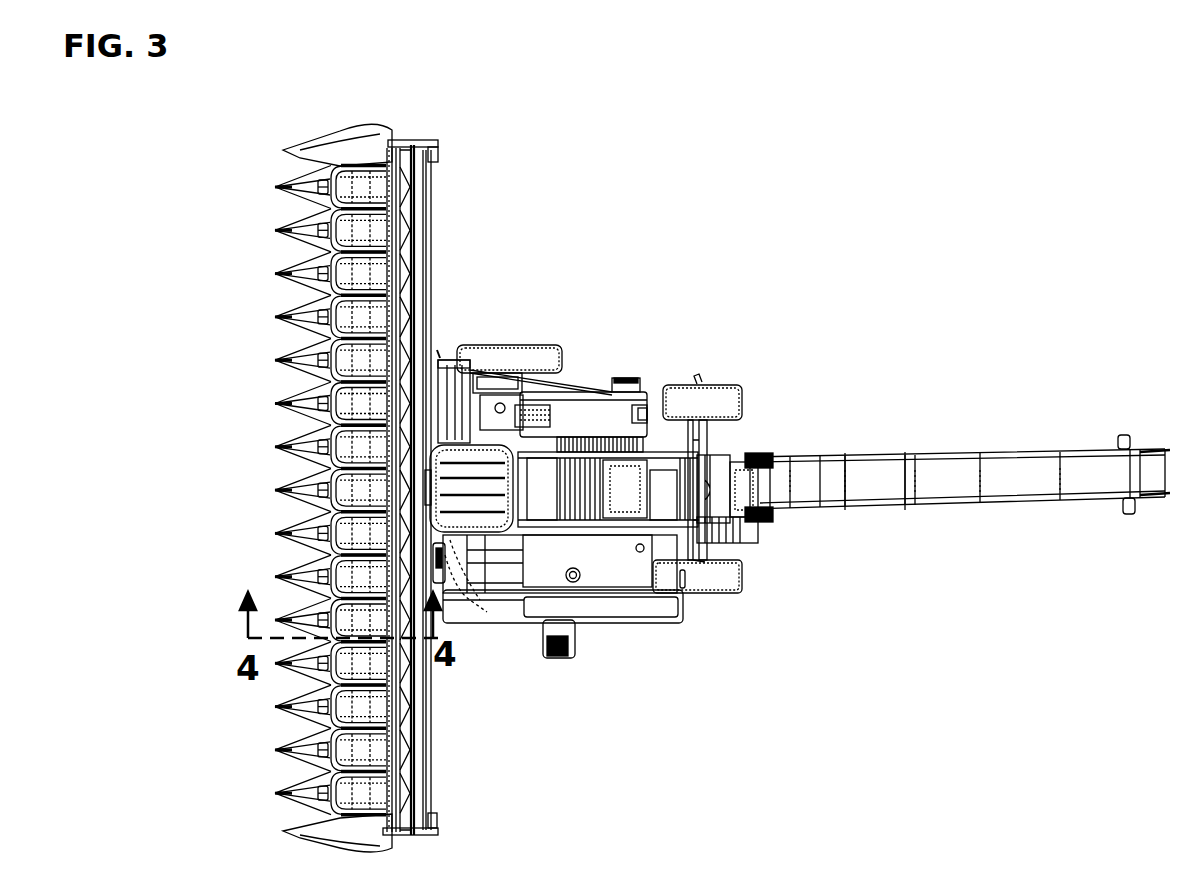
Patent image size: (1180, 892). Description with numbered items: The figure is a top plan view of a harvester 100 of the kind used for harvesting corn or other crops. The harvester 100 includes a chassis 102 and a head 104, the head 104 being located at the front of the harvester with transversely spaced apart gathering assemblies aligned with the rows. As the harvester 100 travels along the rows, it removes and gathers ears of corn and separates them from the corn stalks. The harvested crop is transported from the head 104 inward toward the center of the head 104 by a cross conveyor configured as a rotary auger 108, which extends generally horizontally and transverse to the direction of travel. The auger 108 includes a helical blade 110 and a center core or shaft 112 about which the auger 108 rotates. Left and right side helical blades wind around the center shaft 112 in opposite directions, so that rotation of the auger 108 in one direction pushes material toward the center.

The harvester 100 is at (516, 130).
The chassis 102 is at (639, 402).
The head 104 is at (394, 98).
The rotary auger 108 is at (407, 196).
The helical blade 110 is at (408, 279).
The center core or shaft 112 is at (404, 249).